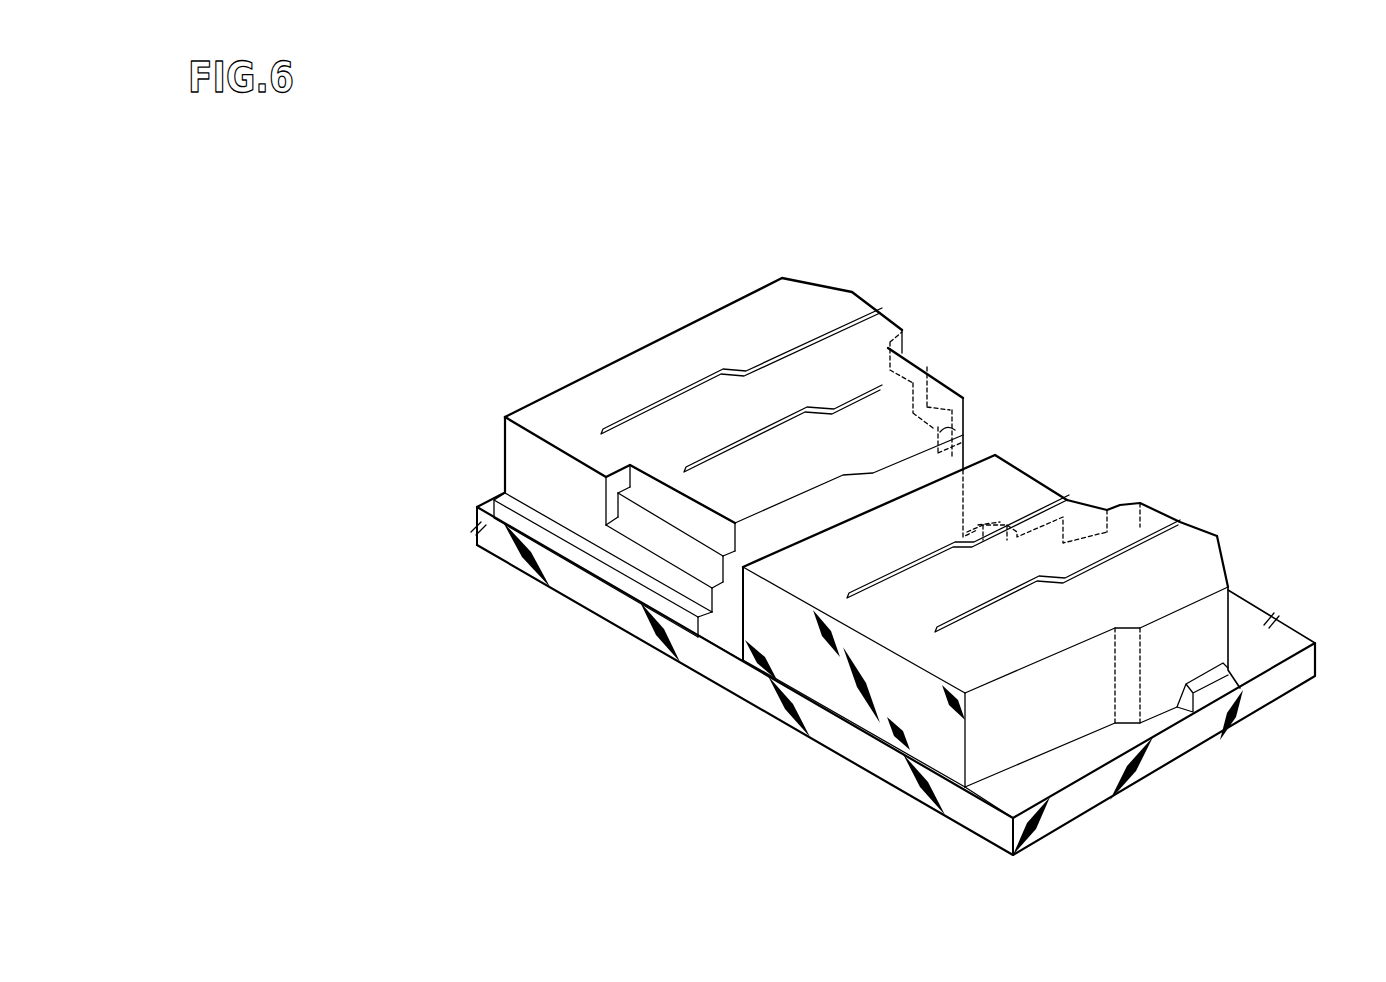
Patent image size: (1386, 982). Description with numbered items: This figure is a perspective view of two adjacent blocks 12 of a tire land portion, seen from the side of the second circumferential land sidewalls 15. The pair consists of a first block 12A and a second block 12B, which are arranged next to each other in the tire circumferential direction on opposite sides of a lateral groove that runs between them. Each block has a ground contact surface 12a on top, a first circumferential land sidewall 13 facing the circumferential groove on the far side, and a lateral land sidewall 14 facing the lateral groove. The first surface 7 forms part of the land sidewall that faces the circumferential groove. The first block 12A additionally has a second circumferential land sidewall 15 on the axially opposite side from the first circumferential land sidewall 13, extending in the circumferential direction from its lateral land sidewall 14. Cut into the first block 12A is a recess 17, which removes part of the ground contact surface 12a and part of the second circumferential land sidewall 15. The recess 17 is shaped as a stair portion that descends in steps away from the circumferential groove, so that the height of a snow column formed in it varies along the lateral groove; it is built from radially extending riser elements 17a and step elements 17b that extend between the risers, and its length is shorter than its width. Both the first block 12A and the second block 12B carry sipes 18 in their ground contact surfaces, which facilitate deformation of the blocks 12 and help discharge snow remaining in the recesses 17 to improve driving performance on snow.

The block 12 is at (758, 252).
The first block 12A is at (800, 313).
The second block 12B is at (1185, 562).
The ground contact surface 12a is at (577, 412).
The first circumferential land sidewall 13 is at (897, 322).
The first surface 7 is at (947, 385).
The lateral land sidewall 14 is at (793, 517).
The second circumferential land sidewall 15 is at (543, 473).
The recess 17 is at (657, 526).
The riser element 17a is at (672, 557).
The step element 17b is at (707, 558).
The sipe 18 is at (690, 387).